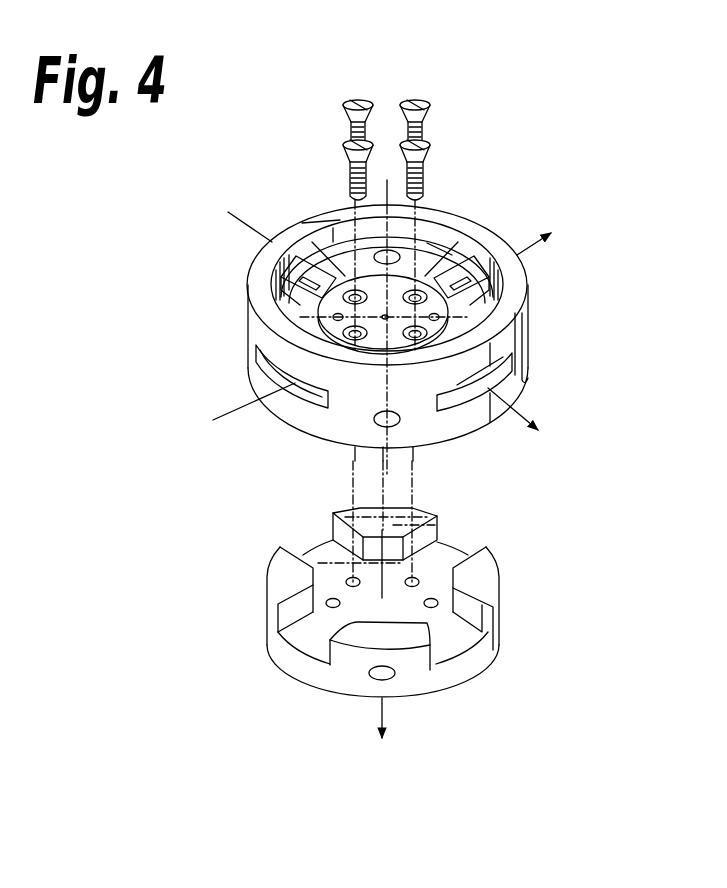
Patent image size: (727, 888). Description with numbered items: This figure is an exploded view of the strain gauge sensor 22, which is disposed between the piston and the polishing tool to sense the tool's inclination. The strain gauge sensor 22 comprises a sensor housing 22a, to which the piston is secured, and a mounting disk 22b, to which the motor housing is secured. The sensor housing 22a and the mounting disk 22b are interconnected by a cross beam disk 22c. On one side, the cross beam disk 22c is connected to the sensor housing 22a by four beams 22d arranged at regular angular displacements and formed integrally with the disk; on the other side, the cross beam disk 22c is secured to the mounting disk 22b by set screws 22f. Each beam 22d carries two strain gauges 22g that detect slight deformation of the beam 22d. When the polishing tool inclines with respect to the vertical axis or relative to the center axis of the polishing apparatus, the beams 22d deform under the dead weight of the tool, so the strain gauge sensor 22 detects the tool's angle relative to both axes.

The strain gauge sensor 22 is at (229, 338).
The sensor housing 22a is at (517, 282).
The mounting disk 22b is at (480, 652).
The cross beam disk 22c is at (443, 328).
The beams 22d is at (478, 282).
The set screws 22f is at (429, 104).
The strain gauges 22g is at (304, 266).